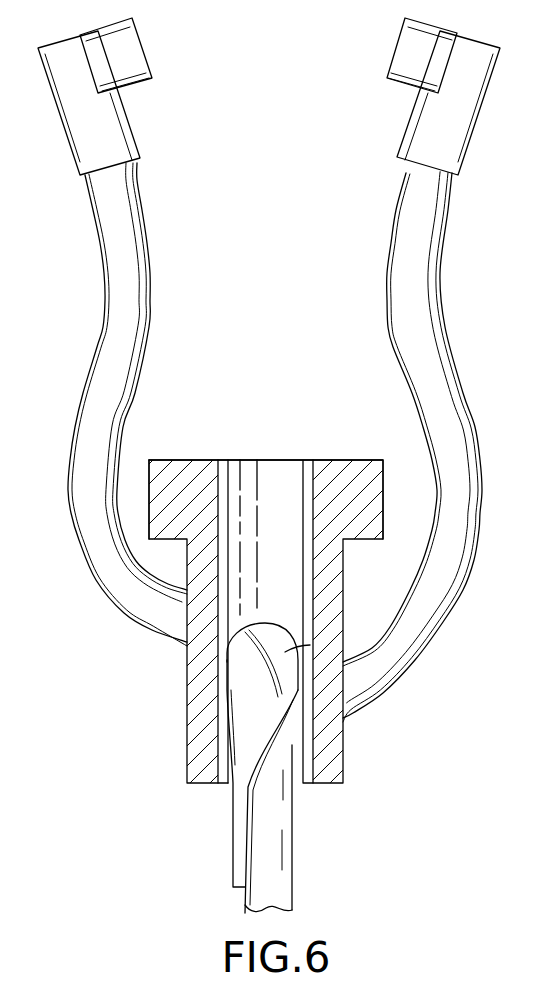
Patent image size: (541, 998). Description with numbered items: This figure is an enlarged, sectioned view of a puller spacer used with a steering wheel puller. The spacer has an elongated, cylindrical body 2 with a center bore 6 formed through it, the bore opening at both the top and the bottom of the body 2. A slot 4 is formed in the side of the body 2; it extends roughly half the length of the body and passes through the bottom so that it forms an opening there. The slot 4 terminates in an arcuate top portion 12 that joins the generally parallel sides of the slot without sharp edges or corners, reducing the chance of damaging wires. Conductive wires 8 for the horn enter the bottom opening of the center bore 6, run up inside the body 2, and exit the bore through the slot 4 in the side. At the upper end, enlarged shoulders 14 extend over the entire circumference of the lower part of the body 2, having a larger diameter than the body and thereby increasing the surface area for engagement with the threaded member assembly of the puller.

The cylindrical body 2 is at (338, 740).
The slot 4 is at (285, 652).
The center bore 6 is at (263, 474).
The conductive wires 8 is at (106, 350).
The arcuate top portion 12 is at (284, 622).
The shoulders 14 is at (158, 474).